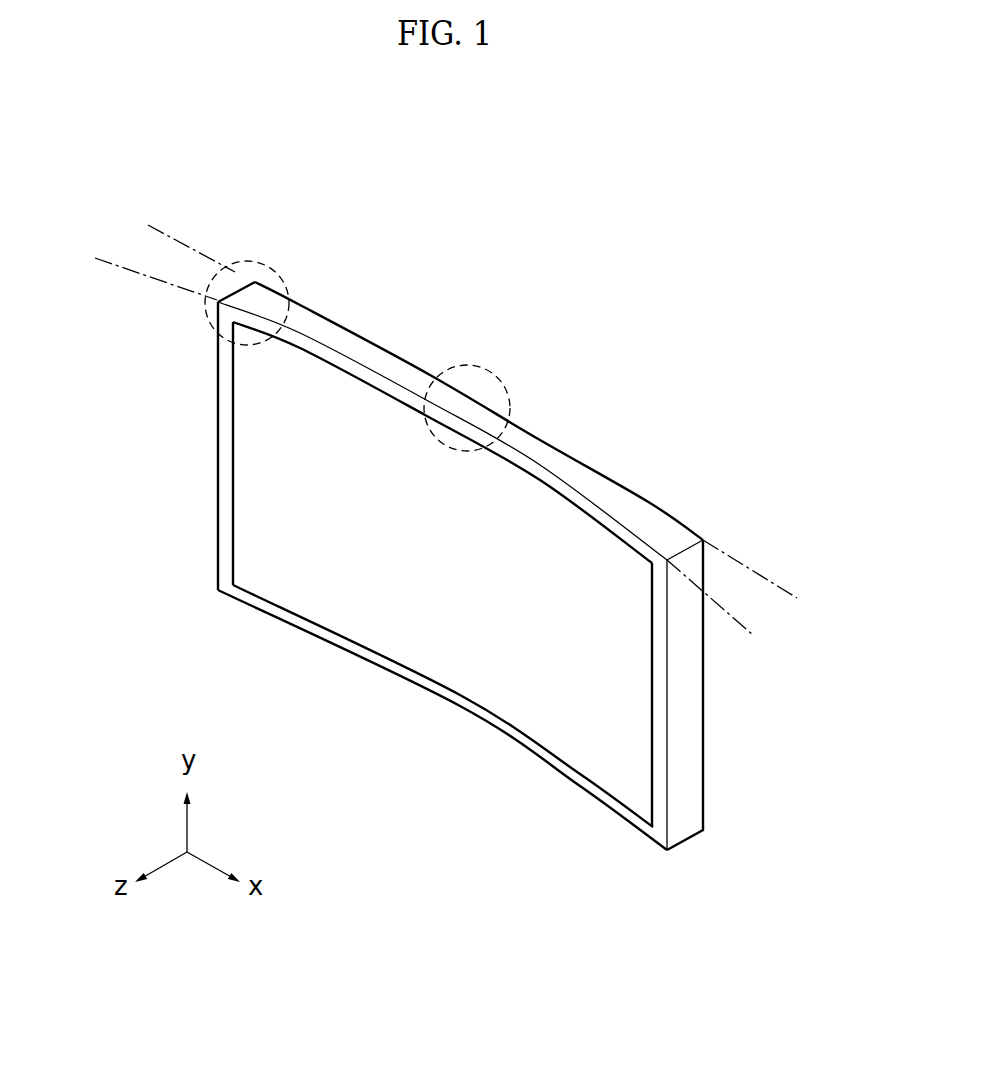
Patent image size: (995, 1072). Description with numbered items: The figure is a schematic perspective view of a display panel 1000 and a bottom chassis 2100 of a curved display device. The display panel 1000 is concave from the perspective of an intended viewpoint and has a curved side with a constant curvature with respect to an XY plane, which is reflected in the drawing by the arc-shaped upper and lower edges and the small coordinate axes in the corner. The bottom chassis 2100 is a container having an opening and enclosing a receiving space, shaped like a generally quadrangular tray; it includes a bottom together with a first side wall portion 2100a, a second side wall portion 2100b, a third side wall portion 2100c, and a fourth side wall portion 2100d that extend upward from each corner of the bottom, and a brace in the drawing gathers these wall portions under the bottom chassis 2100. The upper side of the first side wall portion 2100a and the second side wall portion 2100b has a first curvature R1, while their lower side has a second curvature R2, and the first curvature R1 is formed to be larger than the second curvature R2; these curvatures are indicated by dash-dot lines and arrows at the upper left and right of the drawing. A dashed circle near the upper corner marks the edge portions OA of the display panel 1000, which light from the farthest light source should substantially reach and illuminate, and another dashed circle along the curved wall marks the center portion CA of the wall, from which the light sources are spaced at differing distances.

The display panel 1000 is at (543, 503).
The bottom chassis 2100 is at (453, 825).
The first side wall portion 2100a is at (450, 690).
The second side wall portion 2100b is at (460, 423).
The third side wall portion 2100c is at (228, 520).
The fourth side wall portion 2100d is at (658, 760).
The edge portions OA is at (260, 262).
The center portion CA is at (463, 365).
The first curvature R1 is at (136, 282).
The second curvature R2 is at (205, 243).